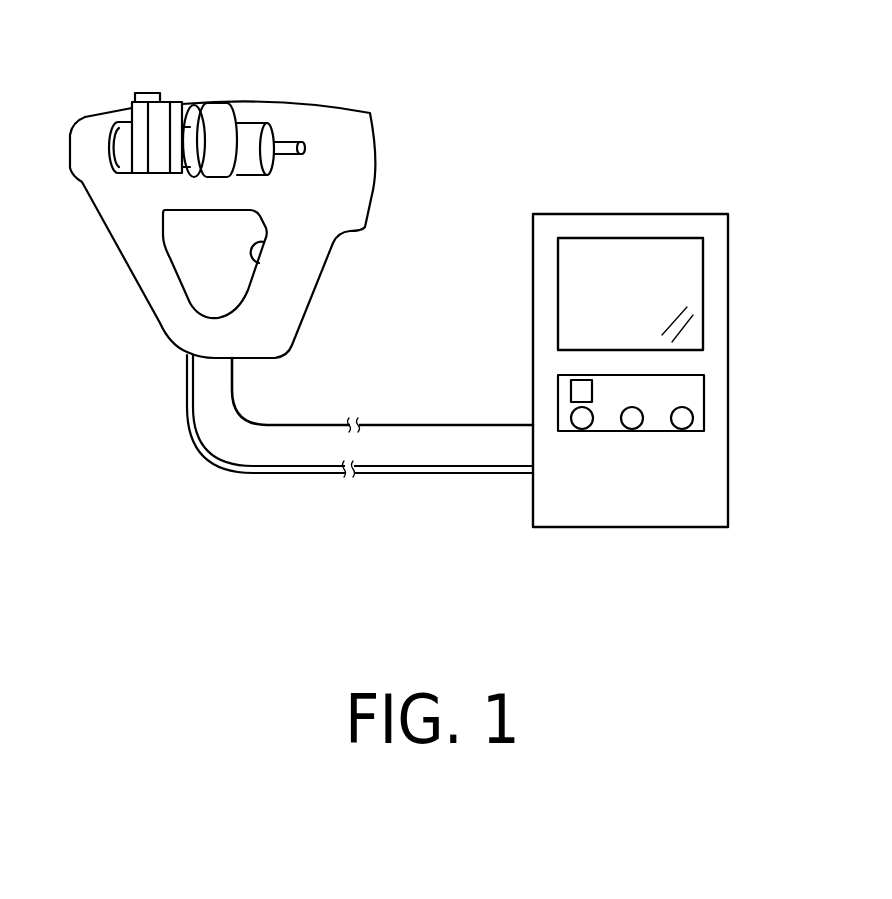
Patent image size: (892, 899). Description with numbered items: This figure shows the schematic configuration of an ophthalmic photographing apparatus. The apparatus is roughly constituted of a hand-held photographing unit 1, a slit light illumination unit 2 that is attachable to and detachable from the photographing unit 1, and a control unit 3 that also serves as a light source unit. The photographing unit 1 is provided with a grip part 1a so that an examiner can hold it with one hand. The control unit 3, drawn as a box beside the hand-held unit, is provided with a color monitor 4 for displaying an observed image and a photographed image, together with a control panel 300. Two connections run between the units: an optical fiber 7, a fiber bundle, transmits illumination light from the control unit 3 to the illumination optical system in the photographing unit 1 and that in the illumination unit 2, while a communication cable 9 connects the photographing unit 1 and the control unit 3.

The photographing unit 1 is at (302, 103).
The grip part 1a is at (298, 253).
The slit light illumination unit 2 is at (132, 160).
The control unit 3 is at (675, 214).
The color monitor 4 is at (683, 278).
The control panel 300 is at (707, 393).
The optical fiber 7 is at (293, 473).
The communication cable 9 is at (455, 423).